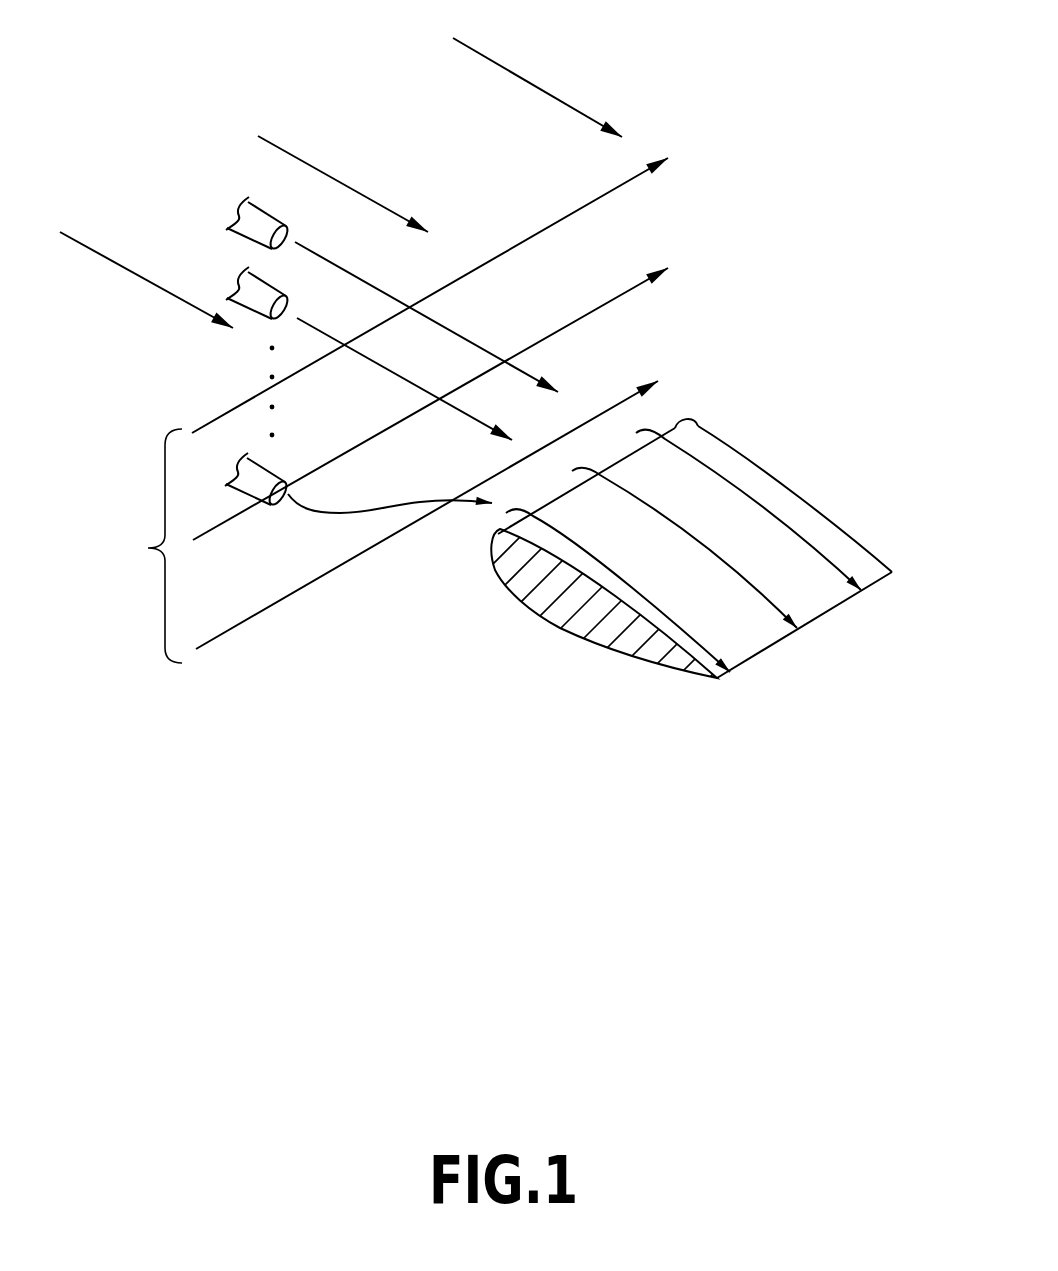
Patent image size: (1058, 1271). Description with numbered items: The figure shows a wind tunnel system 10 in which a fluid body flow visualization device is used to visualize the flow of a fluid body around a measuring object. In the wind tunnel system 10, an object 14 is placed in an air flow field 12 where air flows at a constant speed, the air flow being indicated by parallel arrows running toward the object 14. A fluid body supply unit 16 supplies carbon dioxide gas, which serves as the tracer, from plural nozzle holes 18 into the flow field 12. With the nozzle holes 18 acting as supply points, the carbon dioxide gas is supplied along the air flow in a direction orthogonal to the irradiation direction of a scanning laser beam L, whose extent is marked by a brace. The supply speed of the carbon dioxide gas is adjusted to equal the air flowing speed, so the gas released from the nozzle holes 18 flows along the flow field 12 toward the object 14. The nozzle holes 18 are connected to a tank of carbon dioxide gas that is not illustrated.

The wind tunnel system 10 is at (758, 140).
The air flow field 12 is at (533, 80).
The object 14 is at (770, 490).
The fluid body supply unit 16 is at (334, 243).
The nozzle holes 18 is at (289, 229).
The scanning laser beam L is at (153, 546).